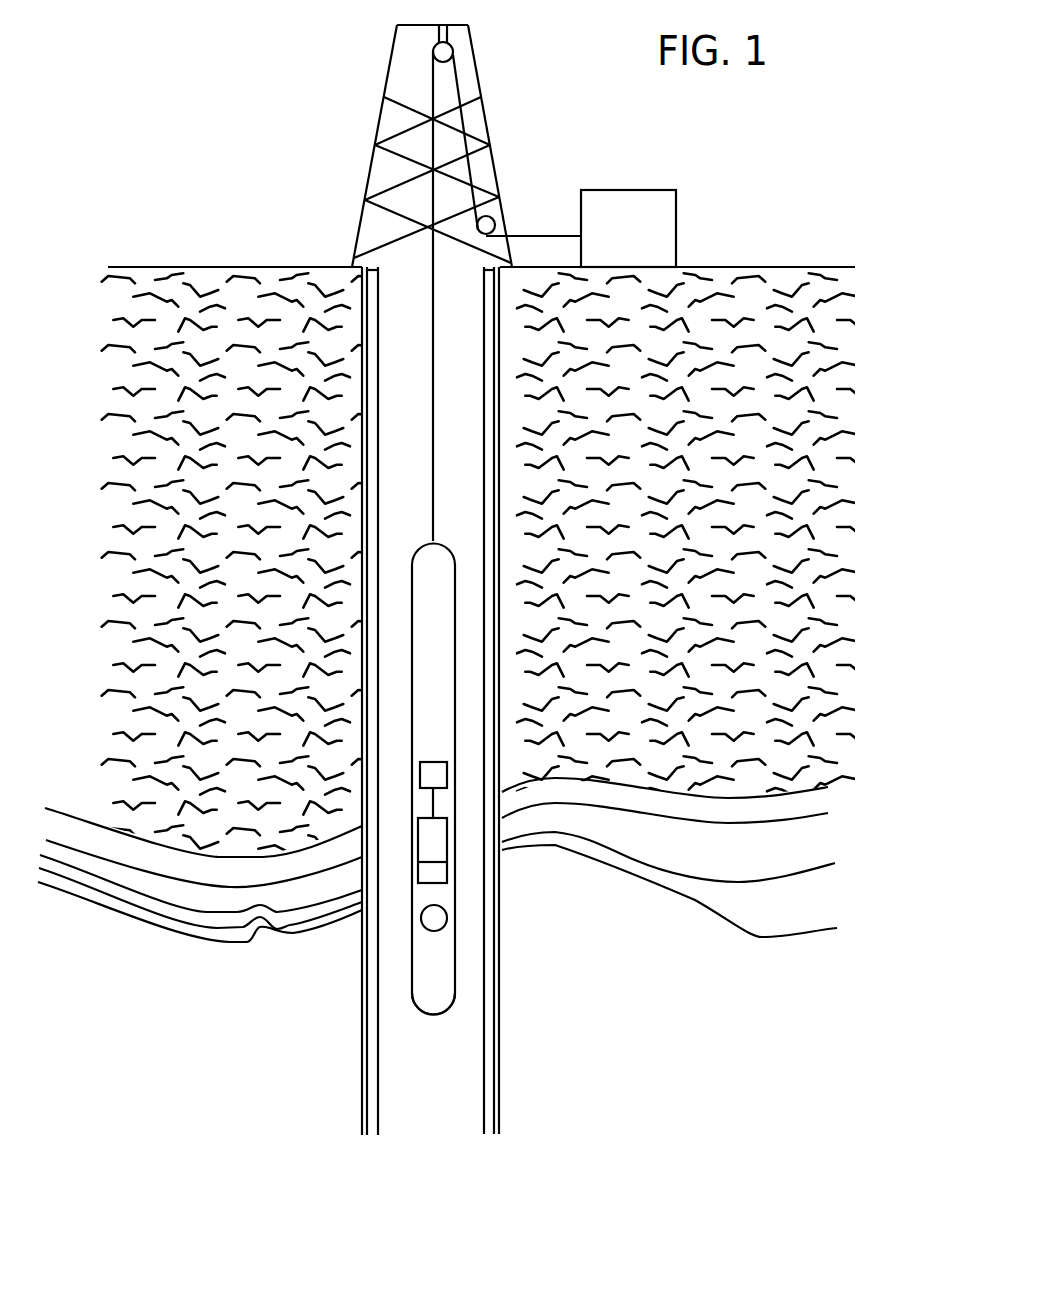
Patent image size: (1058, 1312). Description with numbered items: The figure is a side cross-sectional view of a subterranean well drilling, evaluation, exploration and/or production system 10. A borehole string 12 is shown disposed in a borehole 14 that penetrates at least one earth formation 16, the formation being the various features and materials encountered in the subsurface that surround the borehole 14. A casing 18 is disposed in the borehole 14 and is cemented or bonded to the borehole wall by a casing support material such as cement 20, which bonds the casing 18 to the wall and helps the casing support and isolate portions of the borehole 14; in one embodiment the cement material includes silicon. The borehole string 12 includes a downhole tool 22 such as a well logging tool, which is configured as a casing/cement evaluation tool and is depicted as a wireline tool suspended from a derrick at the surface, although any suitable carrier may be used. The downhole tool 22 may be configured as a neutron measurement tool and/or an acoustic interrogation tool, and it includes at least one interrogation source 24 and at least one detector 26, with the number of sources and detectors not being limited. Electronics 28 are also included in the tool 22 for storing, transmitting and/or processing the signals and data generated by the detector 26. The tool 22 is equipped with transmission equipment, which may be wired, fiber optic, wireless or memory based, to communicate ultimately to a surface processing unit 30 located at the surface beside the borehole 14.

The subterranean well drilling, evaluation, exploration and/or production system 10 is at (328, 146).
The borehole string 12 is at (412, 512).
The borehole 14 is at (411, 293).
The earth formation 16 is at (565, 823).
The casing 18 is at (487, 1135).
The cement 20 is at (495, 1135).
The downhole tool 22 is at (420, 1013).
The interrogation source 24 is at (427, 920).
The detector 26 is at (433, 848).
The electronics 28 is at (433, 773).
The surface processing unit 30 is at (615, 188).